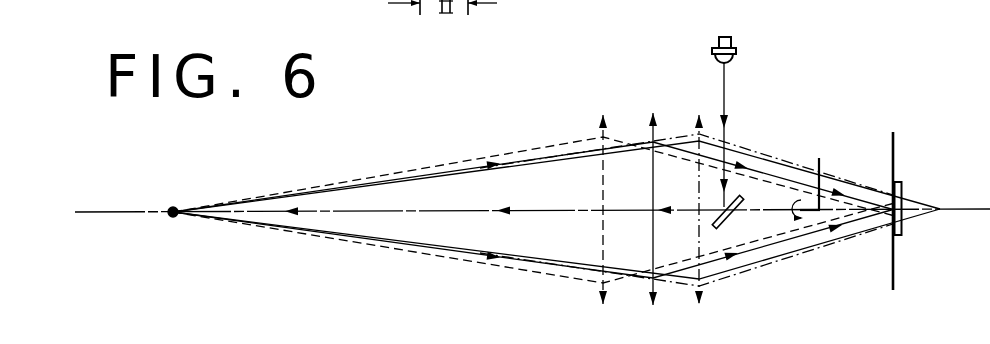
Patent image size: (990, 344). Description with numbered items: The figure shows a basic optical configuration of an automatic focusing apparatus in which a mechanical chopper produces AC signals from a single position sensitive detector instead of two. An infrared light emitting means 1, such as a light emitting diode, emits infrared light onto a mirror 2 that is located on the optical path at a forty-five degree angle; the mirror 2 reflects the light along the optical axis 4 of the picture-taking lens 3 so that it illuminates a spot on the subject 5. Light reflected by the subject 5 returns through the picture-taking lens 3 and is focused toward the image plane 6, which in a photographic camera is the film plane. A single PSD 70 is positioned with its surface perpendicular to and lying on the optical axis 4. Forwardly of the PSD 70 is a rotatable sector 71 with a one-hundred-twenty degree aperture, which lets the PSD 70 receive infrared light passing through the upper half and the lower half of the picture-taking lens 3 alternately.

The infrared light emitting means 1 is at (731, 42).
The mirror 2 is at (733, 219).
The picture-taking lens 3 is at (652, 132).
The optical axis 4 is at (100, 211).
The subject 5 is at (173, 207).
The image plane 6 is at (895, 277).
The PSD 70 is at (902, 185).
The rotatable sector 71 is at (822, 160).